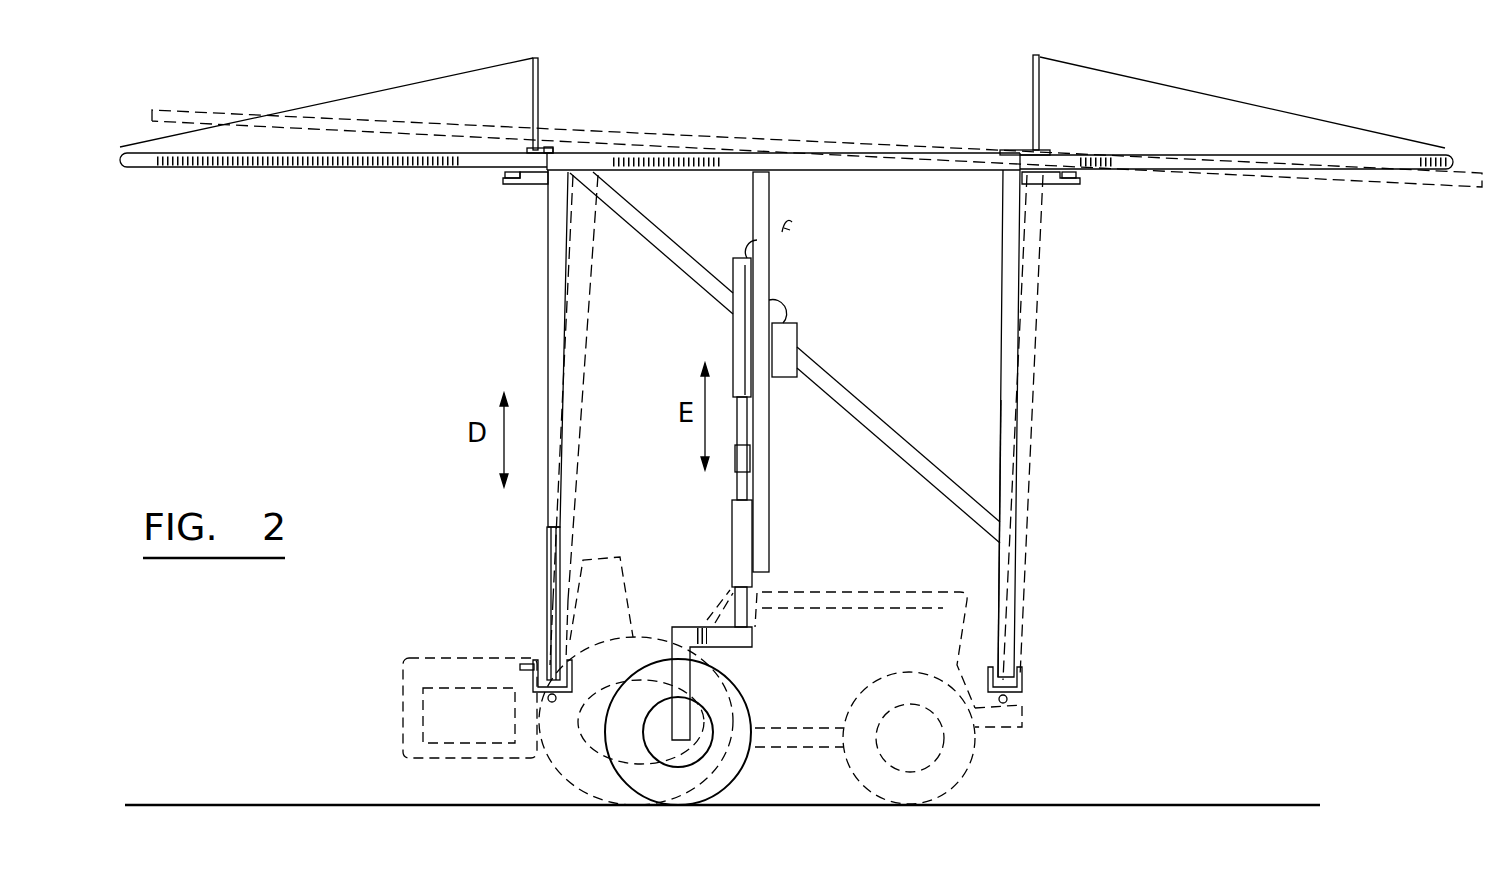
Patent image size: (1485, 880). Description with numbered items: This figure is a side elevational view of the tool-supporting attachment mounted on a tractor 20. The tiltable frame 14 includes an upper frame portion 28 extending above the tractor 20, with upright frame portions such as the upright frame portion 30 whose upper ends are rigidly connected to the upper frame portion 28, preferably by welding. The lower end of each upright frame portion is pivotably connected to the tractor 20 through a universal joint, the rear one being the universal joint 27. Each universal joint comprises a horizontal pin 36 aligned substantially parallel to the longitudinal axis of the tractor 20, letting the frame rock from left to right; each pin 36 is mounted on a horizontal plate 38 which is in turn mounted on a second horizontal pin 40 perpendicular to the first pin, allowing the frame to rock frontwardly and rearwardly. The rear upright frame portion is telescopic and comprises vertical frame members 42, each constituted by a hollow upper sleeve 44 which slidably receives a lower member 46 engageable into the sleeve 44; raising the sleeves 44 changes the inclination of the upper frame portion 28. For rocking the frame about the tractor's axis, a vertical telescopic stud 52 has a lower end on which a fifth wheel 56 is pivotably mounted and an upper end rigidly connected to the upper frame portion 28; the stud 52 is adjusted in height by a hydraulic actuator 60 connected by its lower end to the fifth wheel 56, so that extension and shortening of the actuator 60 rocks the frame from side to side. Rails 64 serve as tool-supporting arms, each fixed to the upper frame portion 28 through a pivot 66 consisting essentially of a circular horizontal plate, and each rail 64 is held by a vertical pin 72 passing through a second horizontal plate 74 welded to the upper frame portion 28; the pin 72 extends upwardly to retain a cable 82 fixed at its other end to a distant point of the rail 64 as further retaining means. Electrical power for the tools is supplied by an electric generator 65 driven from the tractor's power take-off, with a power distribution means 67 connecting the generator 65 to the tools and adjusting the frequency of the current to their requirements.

The tiltable frame 14 is at (1020, 338).
The tractor 20 is at (863, 628).
The universal joint 27 is at (523, 668).
The upper frame portion 28 is at (913, 148).
The upright frame portion 30 is at (1003, 397).
The horizontal pin 36 is at (578, 670).
The horizontal plate 38 is at (572, 706).
The second horizontal pin 40 is at (572, 695).
The vertical frame member 42 is at (554, 312).
The hollow upper sleeve 44 is at (552, 510).
The lower member 46 is at (550, 570).
The vertical telescopic stud 52 is at (762, 502).
The fifth wheel 56 is at (728, 760).
The hydraulic actuator 60 is at (746, 432).
The rail 64 is at (337, 170).
The electric generator 65 is at (437, 717).
The pivot 66 is at (520, 186).
The power distribution means 67 is at (797, 340).
The vertical pin 72 is at (540, 85).
The second horizontal plate 74 is at (548, 147).
The cable 82 is at (393, 88).